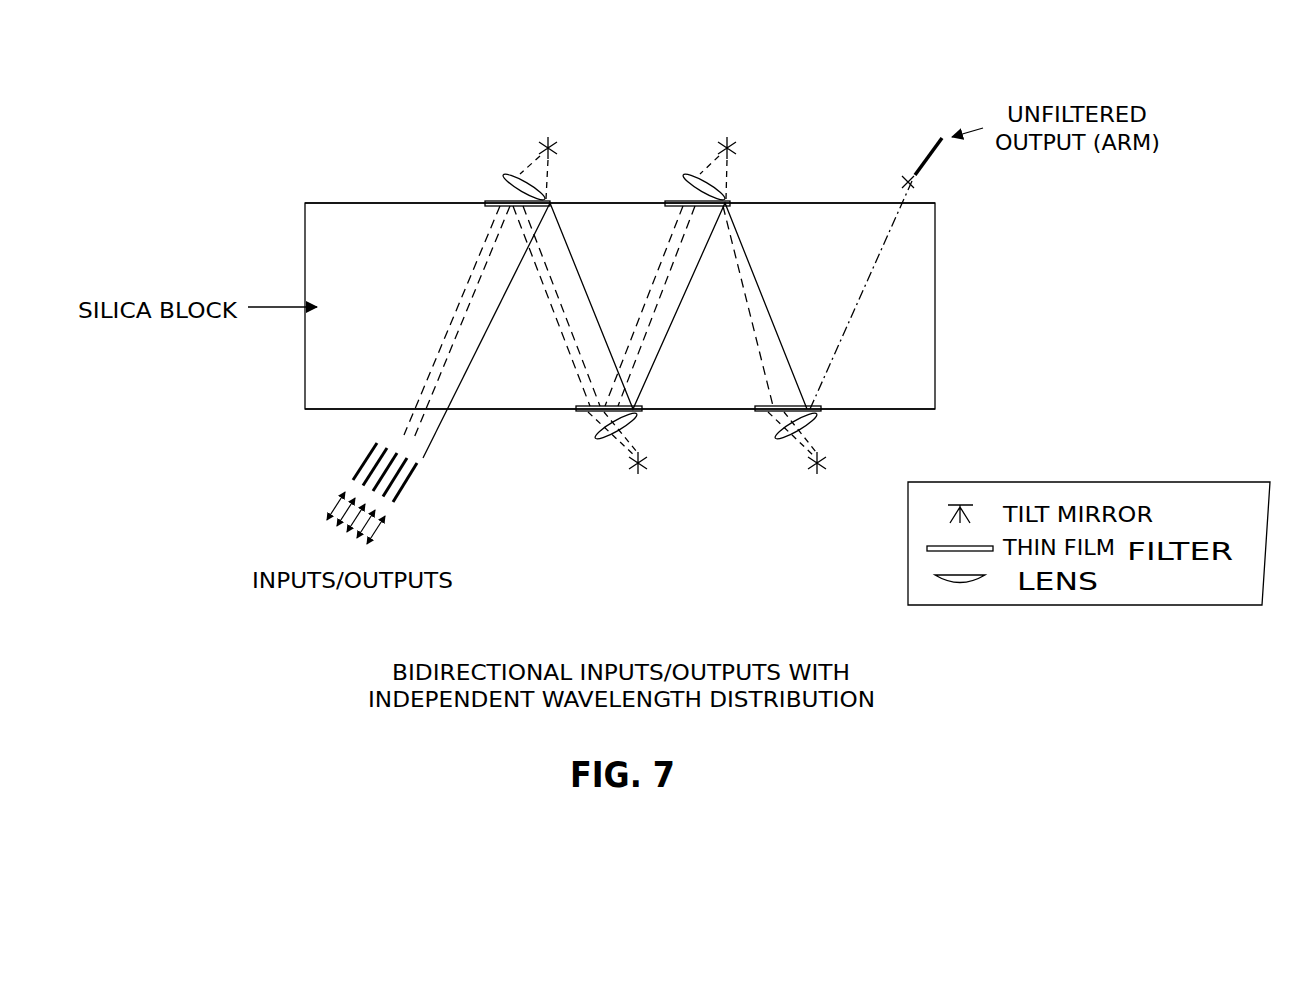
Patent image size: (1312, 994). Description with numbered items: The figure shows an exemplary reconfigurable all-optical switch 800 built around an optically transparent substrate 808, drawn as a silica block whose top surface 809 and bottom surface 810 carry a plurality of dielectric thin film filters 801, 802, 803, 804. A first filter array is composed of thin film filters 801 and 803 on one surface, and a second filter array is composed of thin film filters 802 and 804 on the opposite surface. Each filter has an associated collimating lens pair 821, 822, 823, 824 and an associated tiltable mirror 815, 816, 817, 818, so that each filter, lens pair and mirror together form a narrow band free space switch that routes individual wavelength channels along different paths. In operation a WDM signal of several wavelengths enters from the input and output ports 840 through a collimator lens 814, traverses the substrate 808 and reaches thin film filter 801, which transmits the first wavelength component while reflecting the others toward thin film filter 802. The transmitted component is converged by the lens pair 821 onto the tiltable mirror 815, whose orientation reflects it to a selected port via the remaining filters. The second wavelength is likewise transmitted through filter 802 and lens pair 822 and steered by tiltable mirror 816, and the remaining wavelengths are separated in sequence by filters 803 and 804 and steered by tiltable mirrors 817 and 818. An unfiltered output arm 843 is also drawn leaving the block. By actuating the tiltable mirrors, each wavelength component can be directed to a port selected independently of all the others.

The reconfigurable optical switch 800 is at (205, 118).
The thin film filter 801 is at (490, 202).
The thin film filter 802 is at (578, 412).
The thin film filter 803 is at (670, 202).
The thin film filter 804 is at (758, 412).
The optically transparent substrate 808 is at (313, 360).
The top surface of silica block 809 is at (356, 203).
The bottom surface of silica block 810 is at (480, 410).
The collimator lens 814 is at (447, 482).
The tiltable mirror 815 is at (578, 147).
The tiltable mirror 816 is at (646, 463).
The tiltable mirror 817 is at (758, 147).
The tiltable mirror 818 is at (826, 463).
The collimating lens pair 821 is at (510, 178).
The collimating lens pair 822 is at (603, 437).
The collimating lens pair 823 is at (690, 178).
The collimating lens pair 824 is at (783, 437).
The output ports 840 is at (430, 518).
The unfiltered output (ARM) tilt mirror 843 is at (923, 162).